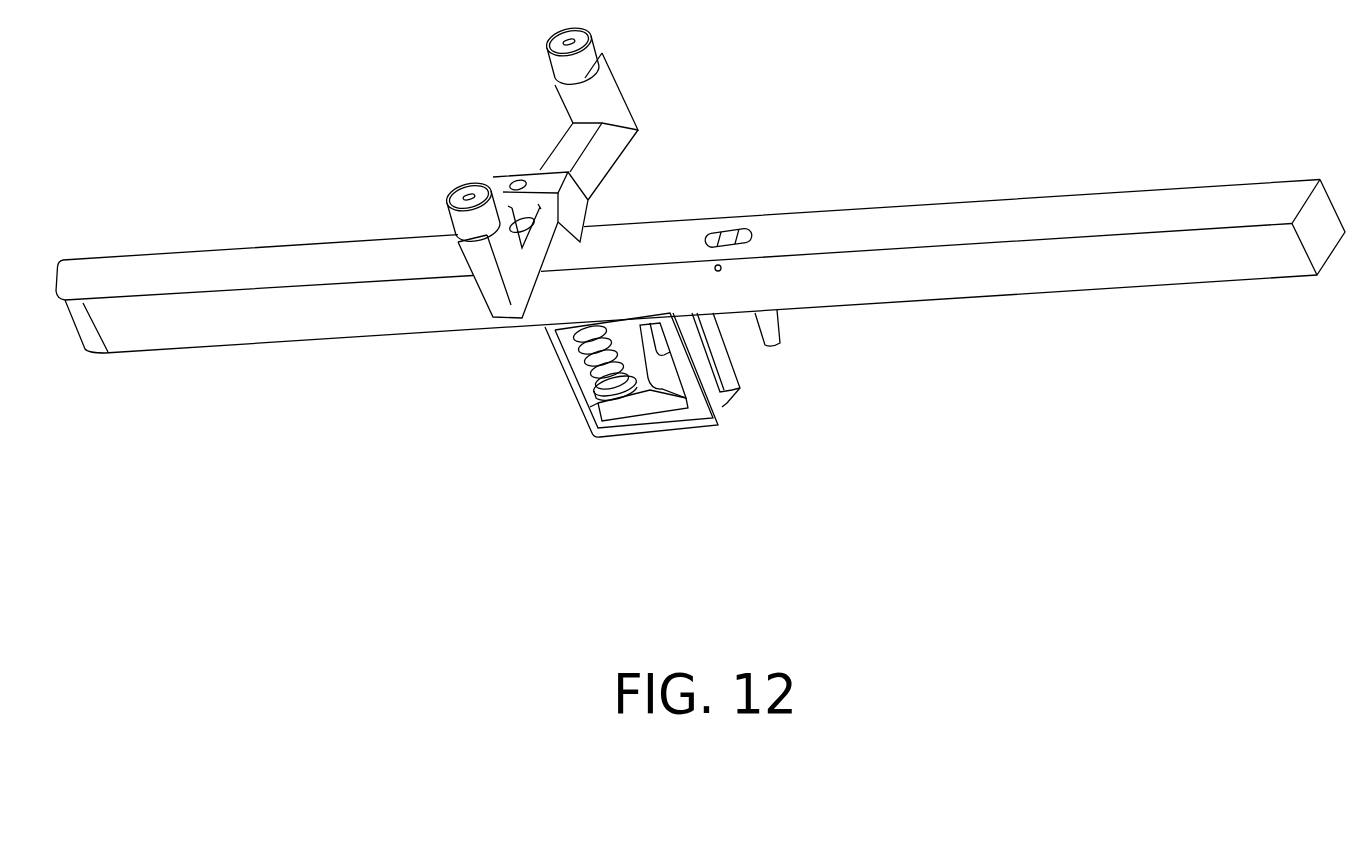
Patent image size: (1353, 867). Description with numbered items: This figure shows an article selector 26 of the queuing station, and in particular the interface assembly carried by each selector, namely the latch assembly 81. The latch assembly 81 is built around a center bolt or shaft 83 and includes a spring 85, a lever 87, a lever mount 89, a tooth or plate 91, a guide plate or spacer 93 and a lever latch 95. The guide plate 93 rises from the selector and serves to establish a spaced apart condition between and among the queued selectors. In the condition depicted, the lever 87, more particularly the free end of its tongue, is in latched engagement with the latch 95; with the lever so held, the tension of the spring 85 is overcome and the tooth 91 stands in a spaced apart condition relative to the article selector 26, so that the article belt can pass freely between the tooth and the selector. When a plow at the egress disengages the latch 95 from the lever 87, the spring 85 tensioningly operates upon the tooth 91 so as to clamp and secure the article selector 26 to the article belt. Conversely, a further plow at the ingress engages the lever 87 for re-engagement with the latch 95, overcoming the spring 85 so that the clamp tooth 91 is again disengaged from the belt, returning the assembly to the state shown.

The article selector 26 is at (196, 337).
The latch assembly 81 is at (510, 390).
The center bolt/shaft 83 is at (610, 378).
The spring 85 is at (588, 360).
The lever 87 is at (660, 405).
The lever mount 89 is at (550, 347).
The tooth or plate 91 is at (496, 180).
The guide plate or spacer 93 is at (617, 132).
The lever latch 95 is at (782, 340).